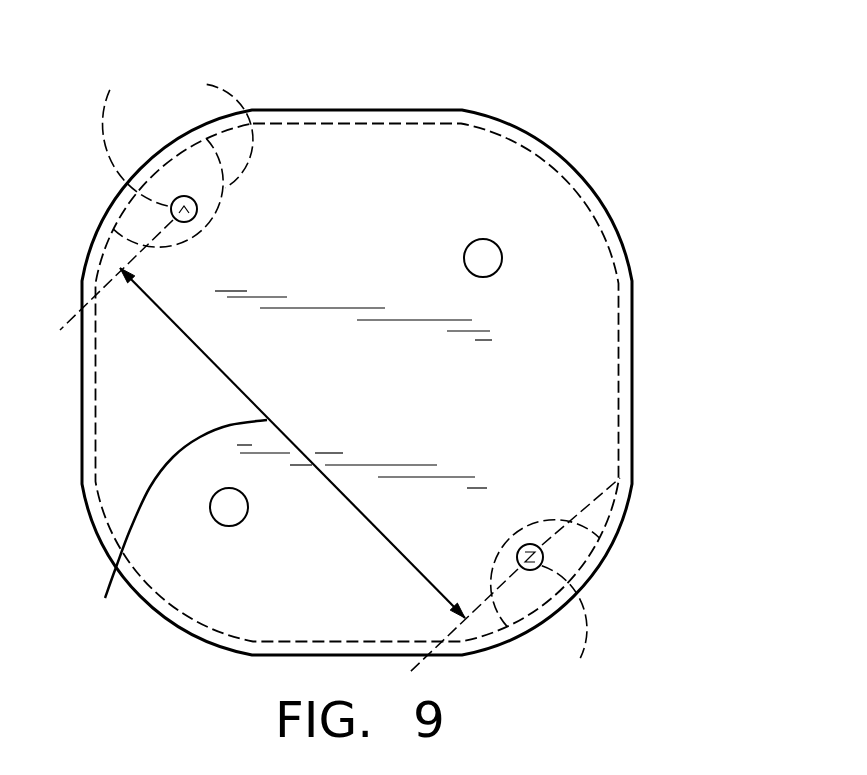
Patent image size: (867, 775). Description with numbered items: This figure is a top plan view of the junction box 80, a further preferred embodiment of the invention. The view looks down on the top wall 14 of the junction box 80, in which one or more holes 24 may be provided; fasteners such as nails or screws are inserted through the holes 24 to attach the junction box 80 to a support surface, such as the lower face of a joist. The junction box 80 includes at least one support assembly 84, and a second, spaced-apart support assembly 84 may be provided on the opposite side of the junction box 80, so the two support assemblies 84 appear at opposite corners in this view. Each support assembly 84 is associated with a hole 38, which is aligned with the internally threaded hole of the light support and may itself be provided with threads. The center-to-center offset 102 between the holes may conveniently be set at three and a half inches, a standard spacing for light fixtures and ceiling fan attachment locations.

The junction box 80 is at (430, 382).
The top wall 14 is at (392, 422).
The hole 24 is at (485, 258).
The center-to-center offset 102 is at (172, 530).
The support assembly 84 is at (672, 450).
The hole 38 is at (345, 379).